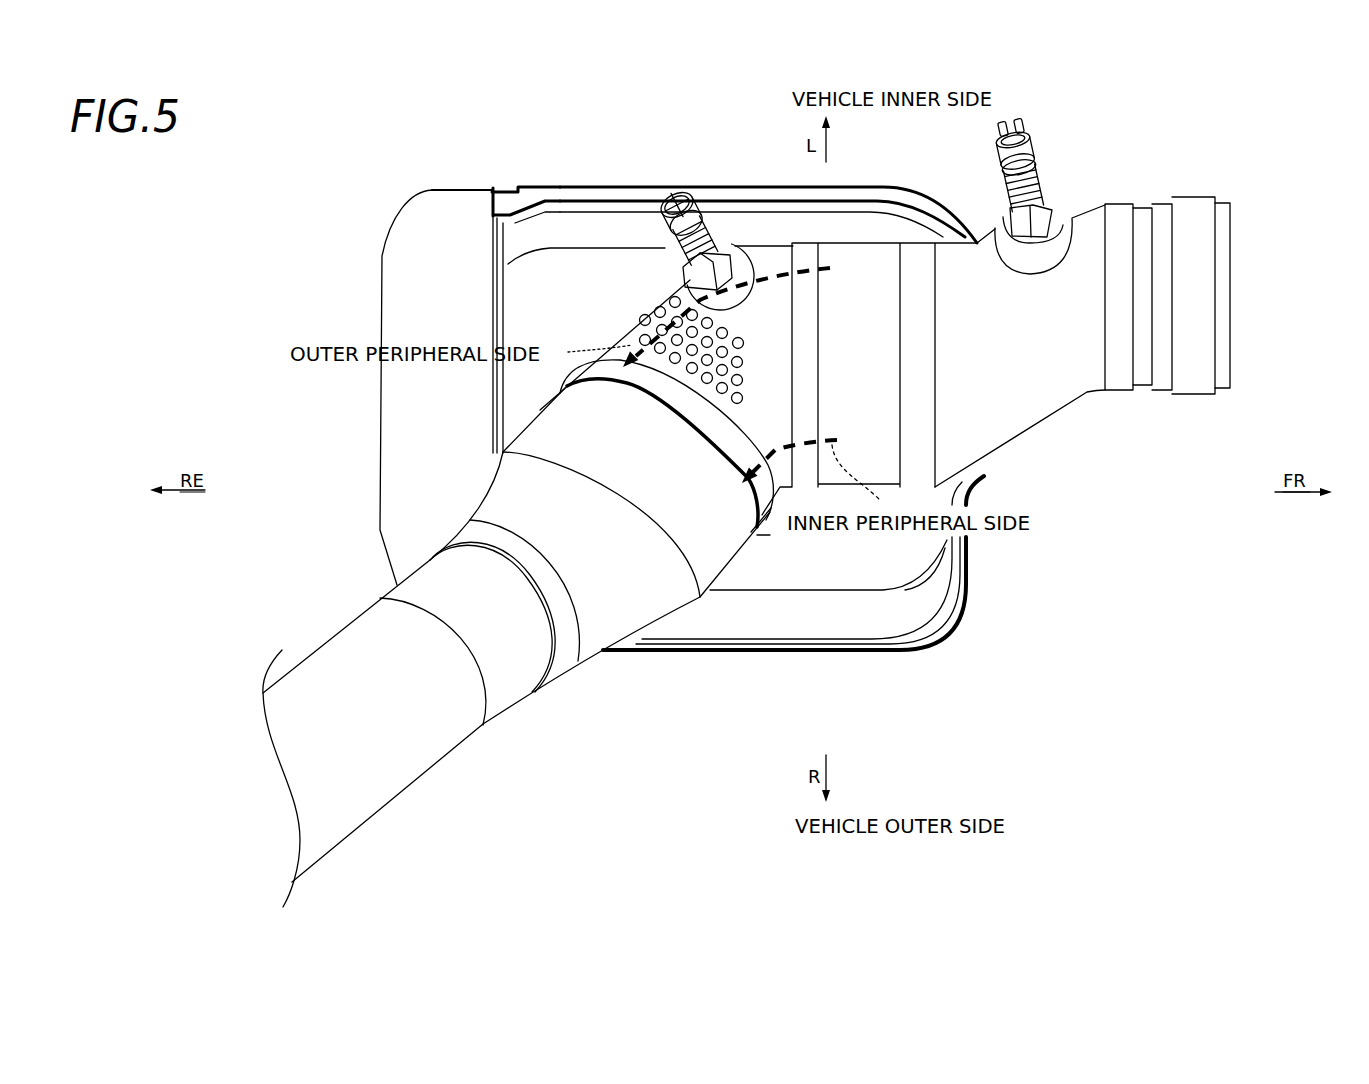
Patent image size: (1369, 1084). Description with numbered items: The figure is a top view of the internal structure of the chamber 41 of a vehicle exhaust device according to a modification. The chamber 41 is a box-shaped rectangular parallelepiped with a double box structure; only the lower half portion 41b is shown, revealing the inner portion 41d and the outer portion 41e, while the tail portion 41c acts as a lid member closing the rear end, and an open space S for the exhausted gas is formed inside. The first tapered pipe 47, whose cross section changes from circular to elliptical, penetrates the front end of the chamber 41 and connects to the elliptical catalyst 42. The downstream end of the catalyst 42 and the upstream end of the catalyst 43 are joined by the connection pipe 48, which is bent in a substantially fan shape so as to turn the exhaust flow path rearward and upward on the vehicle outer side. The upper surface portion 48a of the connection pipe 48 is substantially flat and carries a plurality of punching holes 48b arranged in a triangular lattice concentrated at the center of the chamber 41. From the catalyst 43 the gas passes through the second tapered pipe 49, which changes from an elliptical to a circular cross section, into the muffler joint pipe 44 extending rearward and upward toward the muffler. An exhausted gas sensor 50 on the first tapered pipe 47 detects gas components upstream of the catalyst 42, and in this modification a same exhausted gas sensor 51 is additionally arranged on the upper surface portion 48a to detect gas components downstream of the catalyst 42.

The chamber 41 is at (466, 168).
The lower half portion 41b is at (650, 142).
The tail portion 41c is at (390, 245).
The inner portion 41d is at (547, 190).
The outer portion 41e is at (593, 187).
The catalyst 42 is at (860, 258).
The catalyst 43 is at (723, 543).
The muffler joint pipe 44 is at (402, 772).
The first tapered pipe 47 is at (1078, 395).
The connection pipe 48 is at (622, 304).
The upper surface portion 48a is at (628, 340).
The punching holes 48b is at (640, 303).
The second tapered pipe 49 is at (643, 623).
The exhausted gas sensor 50 is at (1027, 127).
The exhausted gas sensor 51 is at (687, 195).
The open space S is at (891, 619).